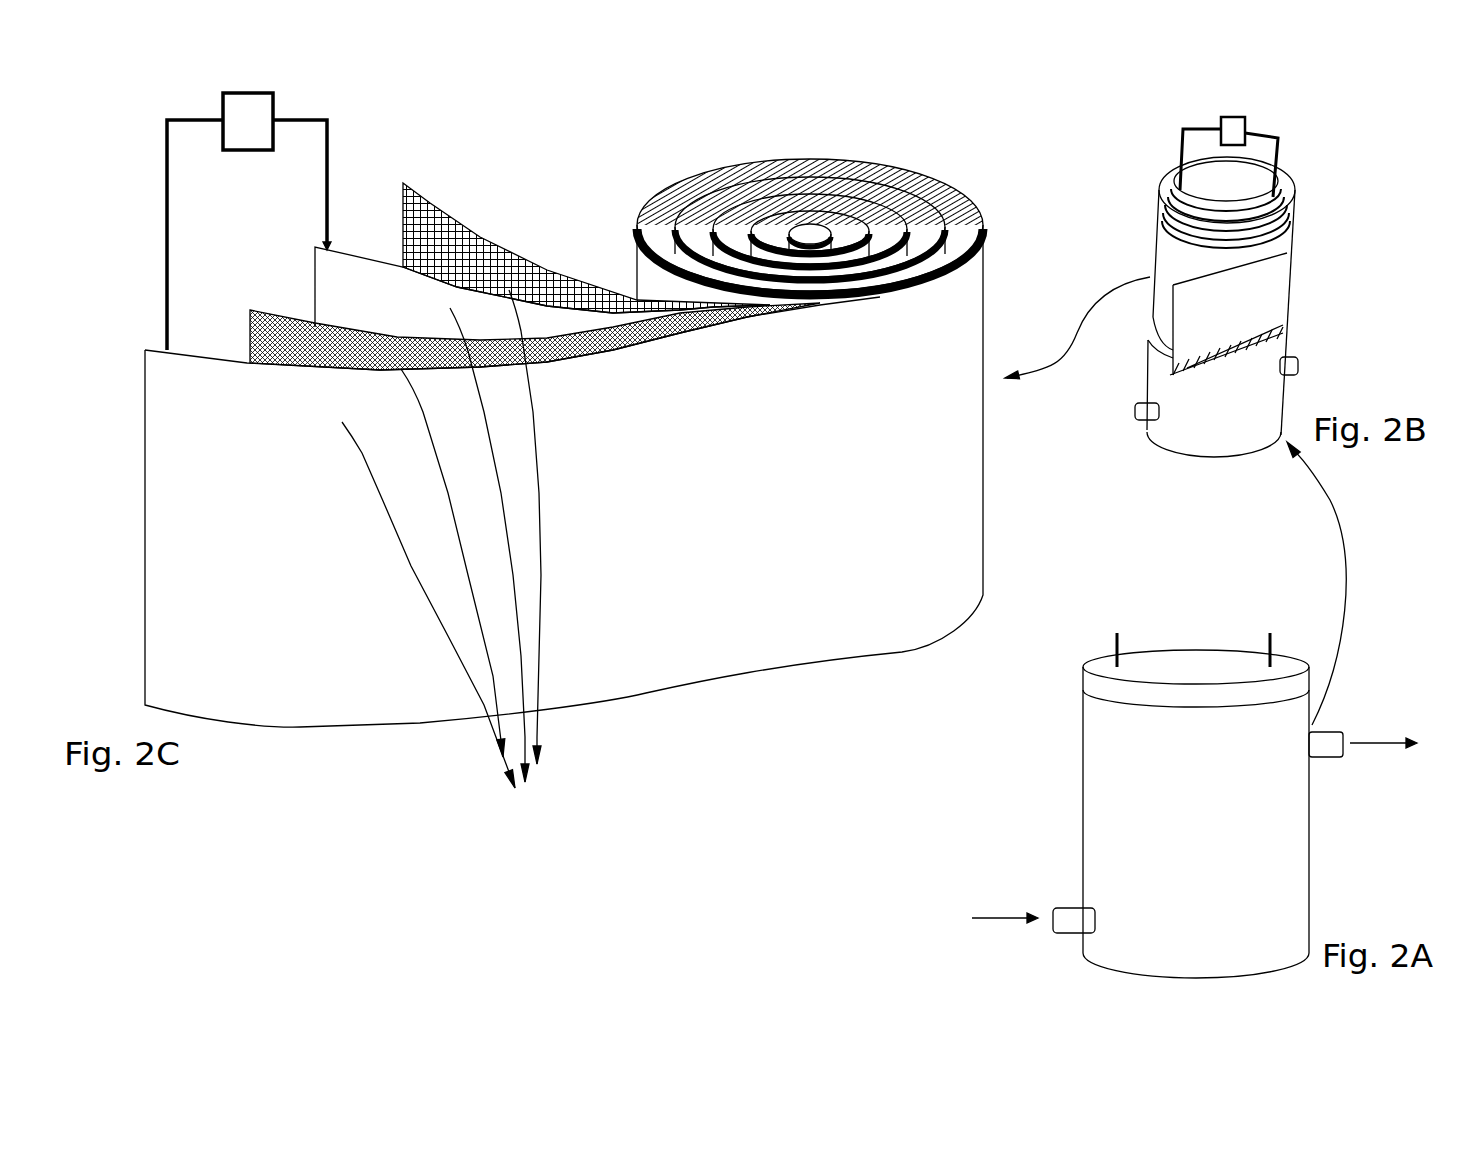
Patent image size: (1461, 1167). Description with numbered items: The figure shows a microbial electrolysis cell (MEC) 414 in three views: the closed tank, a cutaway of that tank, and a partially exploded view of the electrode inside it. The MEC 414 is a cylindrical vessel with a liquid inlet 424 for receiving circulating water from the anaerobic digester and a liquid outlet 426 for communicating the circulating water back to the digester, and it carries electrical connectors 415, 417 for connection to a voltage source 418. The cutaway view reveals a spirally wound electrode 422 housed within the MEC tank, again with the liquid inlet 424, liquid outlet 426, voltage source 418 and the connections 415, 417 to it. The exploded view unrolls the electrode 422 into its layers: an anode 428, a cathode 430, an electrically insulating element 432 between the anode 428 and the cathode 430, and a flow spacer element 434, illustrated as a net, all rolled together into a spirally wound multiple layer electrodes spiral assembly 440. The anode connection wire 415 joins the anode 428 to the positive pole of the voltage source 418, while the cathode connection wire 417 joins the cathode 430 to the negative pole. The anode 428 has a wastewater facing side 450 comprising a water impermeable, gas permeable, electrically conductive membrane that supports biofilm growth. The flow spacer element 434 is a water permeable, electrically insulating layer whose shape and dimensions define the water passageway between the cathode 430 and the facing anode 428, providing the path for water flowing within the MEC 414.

In FIG. 2A, the microbial electrolysis cell 414 is at (1082, 762).
In FIG. 2C, the anode connection wire 415 is at (164, 158).
In FIG. 2B, the anode connection wire 415 is at (1178, 152).
In FIG. 2A, the anode connection wire 415 is at (1114, 644).
In FIG. 2C, the cathode connection wire 417 is at (330, 156).
In FIG. 2B, the cathode connection wire 417 is at (1275, 138).
In FIG. 2A, the cathode connection wire 417 is at (1276, 645).
In FIG. 2C, the voltage source 418 is at (225, 95).
In FIG. 2B, the voltage source 418 is at (1222, 118).
In FIG. 2C, the electrode 422 is at (566, 162).
In FIG. 2B, the electrode 422 is at (1292, 266).
In FIG. 2B, the liquid inlet 424 is at (1138, 420).
In FIG. 2A, the liquid inlet 424 is at (1058, 933).
In FIG. 2B, the liquid outlet 426 is at (1299, 368).
In FIG. 2A, the liquid outlet 426 is at (1342, 733).
In FIG. 2C, the anode 428 is at (145, 350).
In FIG. 2C, the cathode 430 is at (313, 300).
In FIG. 2C, the electrically insulating element 432 is at (248, 343).
In FIG. 2C, the flow spacer element 434 is at (401, 208).
In FIG. 2C, the electrodes spiral assembly 440 is at (451, 552).
In FIG. 2C, the wastewater facing side 450 is at (226, 558).